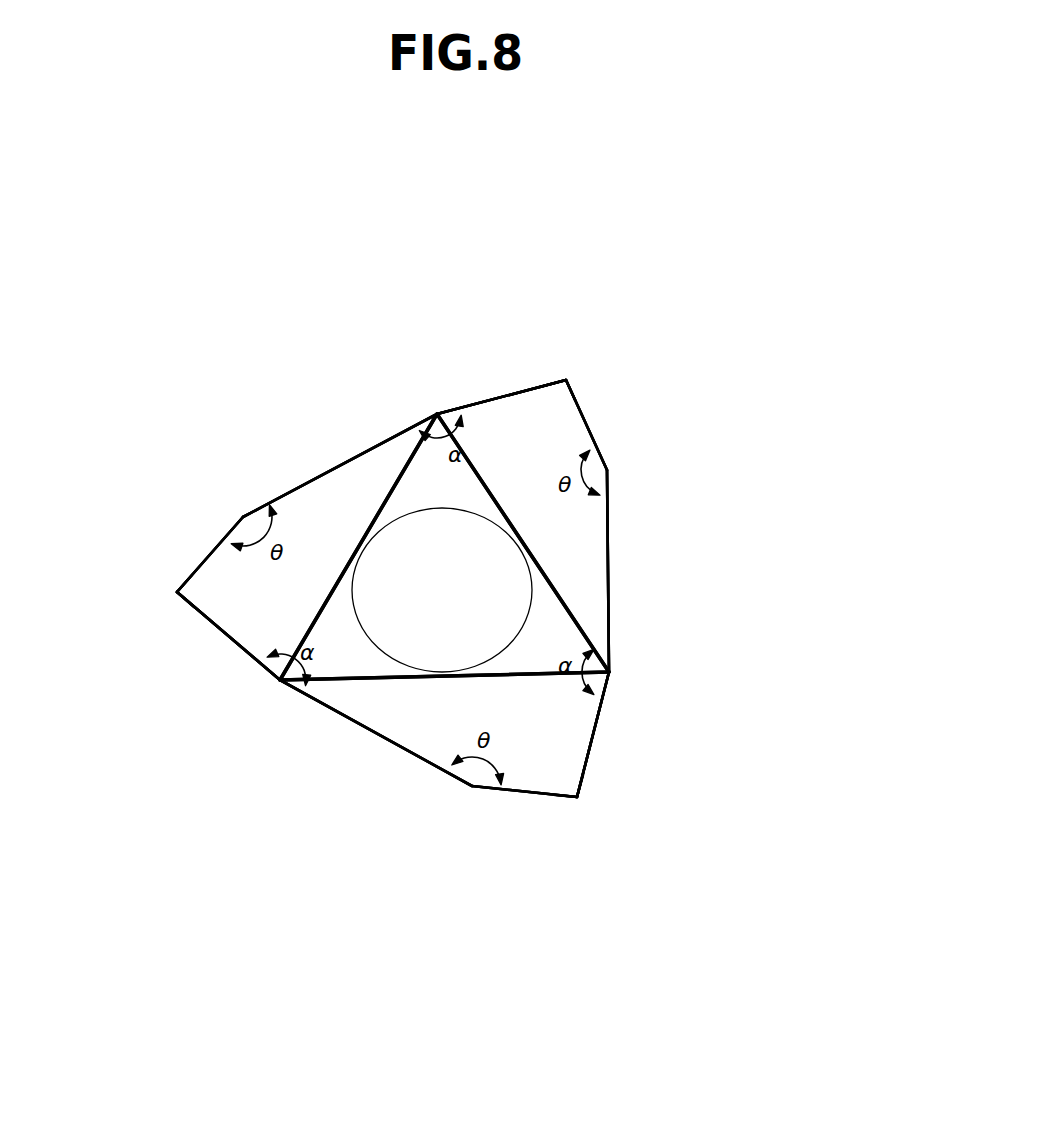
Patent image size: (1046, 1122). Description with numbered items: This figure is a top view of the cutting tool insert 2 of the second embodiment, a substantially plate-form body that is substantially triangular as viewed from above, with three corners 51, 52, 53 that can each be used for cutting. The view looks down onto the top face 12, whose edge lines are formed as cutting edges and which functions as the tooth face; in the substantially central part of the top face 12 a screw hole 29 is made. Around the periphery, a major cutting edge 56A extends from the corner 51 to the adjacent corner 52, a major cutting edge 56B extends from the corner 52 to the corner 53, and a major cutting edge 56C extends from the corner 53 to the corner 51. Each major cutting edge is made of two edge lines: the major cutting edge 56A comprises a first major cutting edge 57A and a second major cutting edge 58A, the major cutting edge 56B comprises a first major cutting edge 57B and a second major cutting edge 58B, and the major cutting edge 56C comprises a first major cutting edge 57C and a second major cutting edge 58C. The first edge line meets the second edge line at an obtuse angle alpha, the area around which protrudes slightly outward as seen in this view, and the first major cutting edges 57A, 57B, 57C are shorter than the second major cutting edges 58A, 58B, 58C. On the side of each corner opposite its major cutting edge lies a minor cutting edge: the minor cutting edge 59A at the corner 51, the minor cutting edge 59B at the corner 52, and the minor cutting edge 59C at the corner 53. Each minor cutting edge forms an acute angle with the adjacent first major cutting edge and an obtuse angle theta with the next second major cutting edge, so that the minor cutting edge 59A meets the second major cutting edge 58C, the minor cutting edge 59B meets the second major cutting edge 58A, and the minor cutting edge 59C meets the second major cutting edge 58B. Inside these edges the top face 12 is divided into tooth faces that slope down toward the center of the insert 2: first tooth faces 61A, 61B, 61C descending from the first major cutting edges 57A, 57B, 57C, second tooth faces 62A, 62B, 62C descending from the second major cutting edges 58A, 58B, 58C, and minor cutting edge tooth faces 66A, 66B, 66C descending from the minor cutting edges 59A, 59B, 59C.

The insert 2 is at (703, 312).
The top face 12 is at (600, 637).
The screw hole 29 is at (410, 667).
The corner 51 is at (577, 797).
The corner 52 is at (567, 380).
The corner 53 is at (178, 594).
The major cutting edge 56A is at (806, 558).
The major cutting edge 56B is at (492, 328).
The major cutting edge 56C is at (297, 784).
The first major cutting edge 57A is at (598, 717).
The first major cutting edge 57B is at (477, 403).
The first major cutting edge 57C is at (233, 640).
The second major cutting edge 58A is at (607, 568).
The second major cutting edge 58B is at (370, 443).
The second major cutting edge 58C is at (337, 715).
The minor cutting edge 59A is at (518, 788).
The minor cutting edge 59B is at (587, 427).
The minor cutting edge 59C is at (213, 550).
The first tooth face 61A is at (565, 742).
The first tooth face 61B is at (527, 422).
The first tooth face 61C is at (225, 607).
The second tooth face 62A is at (607, 607).
The second tooth face 62B is at (343, 503).
The second tooth face 62C is at (383, 703).
The minor cutting edge tooth face 66A is at (540, 768).
The minor cutting edge tooth face 66B is at (567, 423).
The minor cutting edge tooth face 66C is at (230, 580).